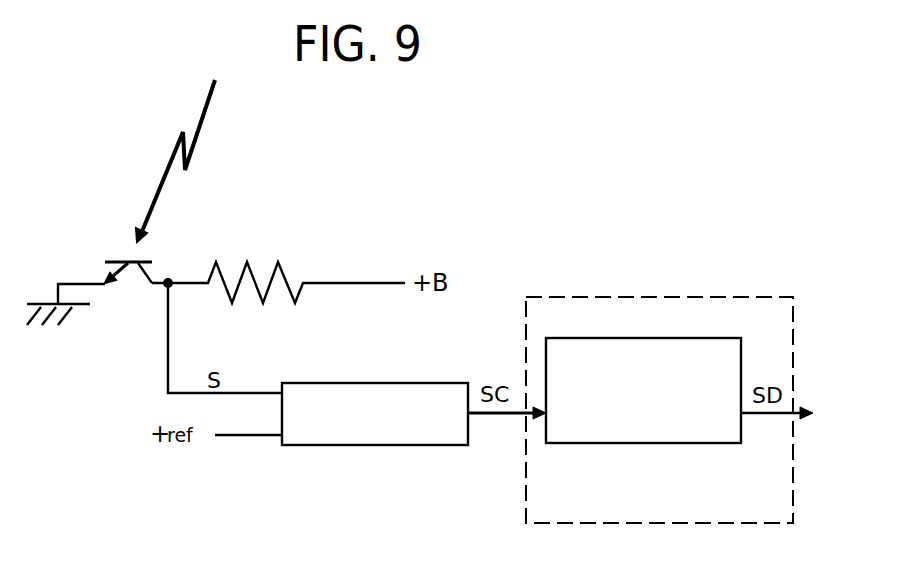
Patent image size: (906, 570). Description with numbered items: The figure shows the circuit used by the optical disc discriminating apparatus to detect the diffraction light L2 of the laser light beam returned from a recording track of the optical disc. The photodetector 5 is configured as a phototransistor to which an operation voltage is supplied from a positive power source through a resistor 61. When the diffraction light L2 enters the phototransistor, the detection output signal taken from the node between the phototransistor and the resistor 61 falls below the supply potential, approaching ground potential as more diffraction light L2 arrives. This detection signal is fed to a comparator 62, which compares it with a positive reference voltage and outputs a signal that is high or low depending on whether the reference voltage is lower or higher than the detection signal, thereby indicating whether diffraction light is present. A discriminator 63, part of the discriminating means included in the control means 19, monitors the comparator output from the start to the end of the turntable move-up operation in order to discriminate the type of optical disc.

The photodetector 5 is at (103, 265).
The control means 19 is at (608, 295).
The resistor 61 is at (250, 262).
The comparator 62 is at (387, 445).
The discriminator 63 is at (650, 445).
The diffraction light L2 is at (167, 172).